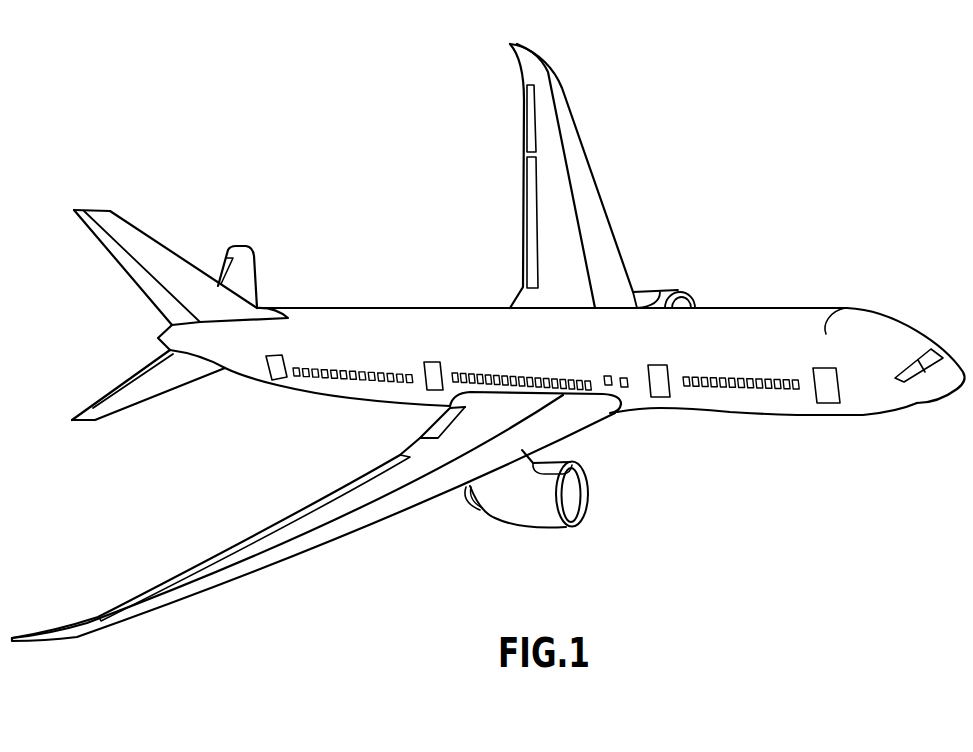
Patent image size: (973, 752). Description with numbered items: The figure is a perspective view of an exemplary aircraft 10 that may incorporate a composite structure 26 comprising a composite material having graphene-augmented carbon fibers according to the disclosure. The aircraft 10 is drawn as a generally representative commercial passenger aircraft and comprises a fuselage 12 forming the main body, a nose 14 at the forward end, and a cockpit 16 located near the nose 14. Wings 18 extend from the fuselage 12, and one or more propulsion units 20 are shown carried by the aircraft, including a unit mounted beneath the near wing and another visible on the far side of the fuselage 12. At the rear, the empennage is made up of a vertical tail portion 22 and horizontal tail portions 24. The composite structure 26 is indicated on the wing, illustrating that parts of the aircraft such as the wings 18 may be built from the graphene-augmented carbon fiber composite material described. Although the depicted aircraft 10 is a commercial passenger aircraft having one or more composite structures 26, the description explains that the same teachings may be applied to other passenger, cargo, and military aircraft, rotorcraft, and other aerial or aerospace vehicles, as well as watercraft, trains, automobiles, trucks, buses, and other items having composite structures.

The aircraft 10 is at (793, 158).
The fuselage 12 is at (743, 317).
The nose 14 is at (948, 387).
The cockpit 16 is at (935, 350).
The wings 18 is at (560, 110).
The propulsion units 20 is at (667, 297).
The vertical tail portion 22 is at (148, 253).
The horizontal tail portions 24 is at (242, 275).
The composite structure 26 is at (268, 537).